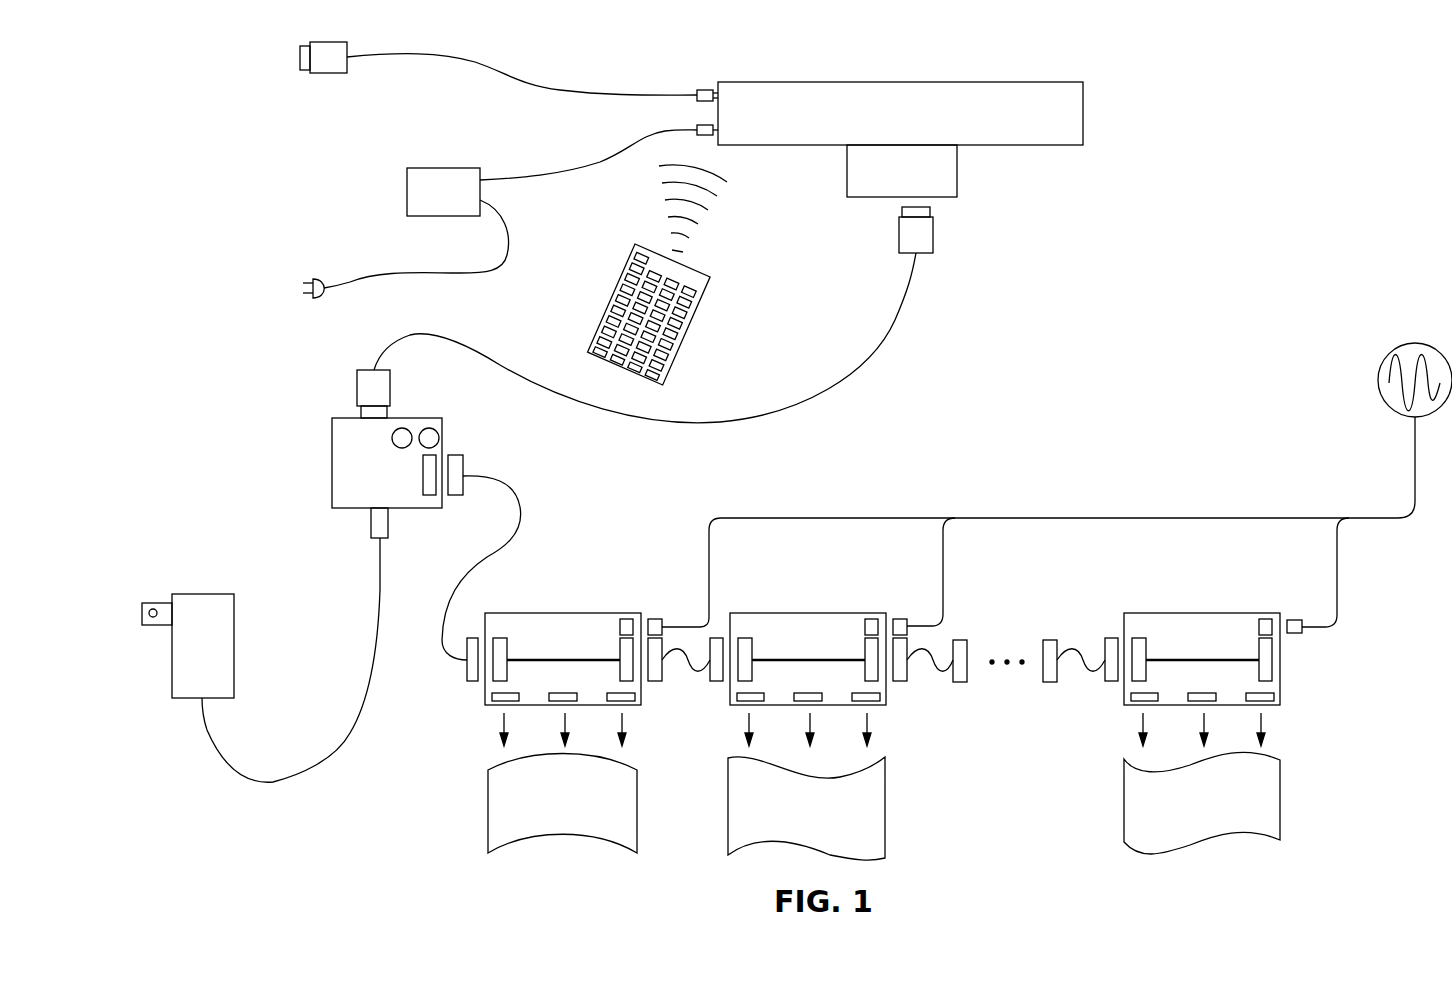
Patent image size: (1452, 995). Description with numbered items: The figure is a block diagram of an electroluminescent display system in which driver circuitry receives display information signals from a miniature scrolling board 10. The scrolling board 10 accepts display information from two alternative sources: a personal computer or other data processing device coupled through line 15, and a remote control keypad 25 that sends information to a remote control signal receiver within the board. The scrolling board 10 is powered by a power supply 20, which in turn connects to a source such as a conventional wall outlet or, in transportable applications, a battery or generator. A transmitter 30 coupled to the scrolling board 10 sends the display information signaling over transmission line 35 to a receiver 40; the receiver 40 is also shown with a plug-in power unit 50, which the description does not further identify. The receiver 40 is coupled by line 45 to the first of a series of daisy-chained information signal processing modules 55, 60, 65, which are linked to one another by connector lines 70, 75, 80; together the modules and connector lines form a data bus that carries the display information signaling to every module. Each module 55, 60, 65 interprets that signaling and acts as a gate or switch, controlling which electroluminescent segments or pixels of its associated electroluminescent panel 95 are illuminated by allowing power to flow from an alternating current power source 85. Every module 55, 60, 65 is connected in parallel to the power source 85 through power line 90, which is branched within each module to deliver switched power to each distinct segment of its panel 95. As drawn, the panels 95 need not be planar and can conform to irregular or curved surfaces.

The miniature scrolling board 10 is at (1083, 100).
The line 15 is at (467, 57).
The power supply 20 is at (443, 168).
The remote control keypad 25 is at (702, 310).
The transmitter 30 is at (957, 173).
The transmission line 35 is at (886, 345).
The receiver 40 is at (330, 452).
The line 45 is at (519, 513).
The power adapter 50 is at (234, 628).
The information signal processing module 55 is at (553, 613).
The information signal processing module 60 is at (798, 613).
The information signal processing module 65 is at (1177, 613).
The connector line 70 is at (680, 667).
The connector line 75 is at (932, 660).
The connector line 80 is at (1080, 663).
The alternating current power source 85 is at (1375, 372).
The power line 90 is at (1415, 452).
The electroluminescent panels 95 is at (637, 795).